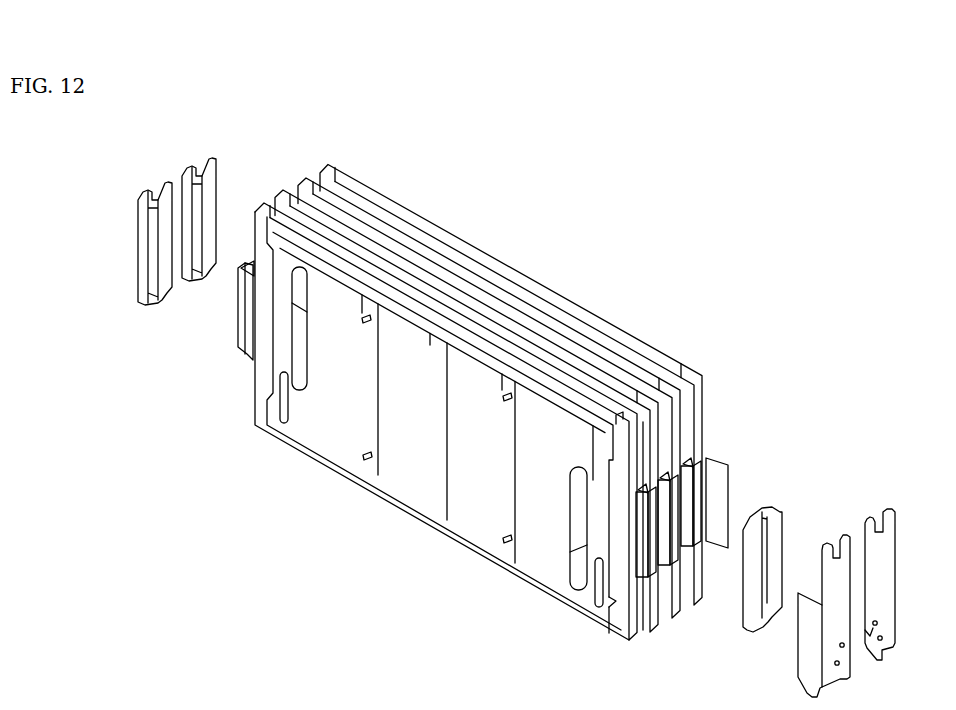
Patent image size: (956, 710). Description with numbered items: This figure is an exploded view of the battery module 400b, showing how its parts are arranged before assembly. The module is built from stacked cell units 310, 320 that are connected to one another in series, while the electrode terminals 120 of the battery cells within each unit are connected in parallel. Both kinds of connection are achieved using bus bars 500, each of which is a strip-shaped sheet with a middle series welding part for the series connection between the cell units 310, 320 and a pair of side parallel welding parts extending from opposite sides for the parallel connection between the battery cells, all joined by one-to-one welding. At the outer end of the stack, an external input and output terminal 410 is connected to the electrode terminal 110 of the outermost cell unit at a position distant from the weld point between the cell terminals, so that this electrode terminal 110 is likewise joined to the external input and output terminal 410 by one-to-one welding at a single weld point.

The electrode terminal 110 is at (645, 574).
The electrode terminal 120 is at (242, 308).
The cell unit 310 is at (415, 487).
The cell unit 320 is at (604, 368).
The battery module 400b is at (80, 156).
The external input and output terminal 410 is at (812, 660).
The bus bar 500 is at (136, 256).